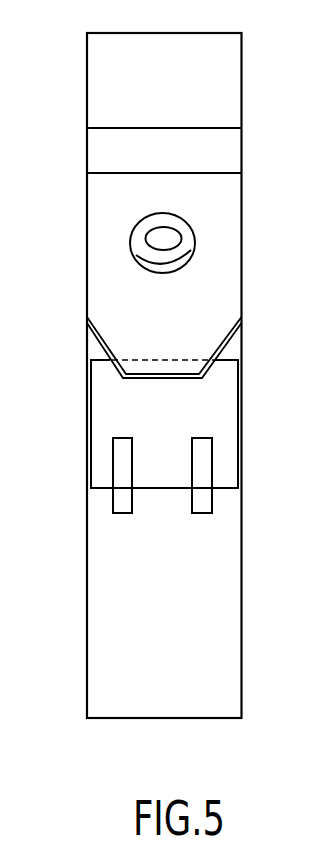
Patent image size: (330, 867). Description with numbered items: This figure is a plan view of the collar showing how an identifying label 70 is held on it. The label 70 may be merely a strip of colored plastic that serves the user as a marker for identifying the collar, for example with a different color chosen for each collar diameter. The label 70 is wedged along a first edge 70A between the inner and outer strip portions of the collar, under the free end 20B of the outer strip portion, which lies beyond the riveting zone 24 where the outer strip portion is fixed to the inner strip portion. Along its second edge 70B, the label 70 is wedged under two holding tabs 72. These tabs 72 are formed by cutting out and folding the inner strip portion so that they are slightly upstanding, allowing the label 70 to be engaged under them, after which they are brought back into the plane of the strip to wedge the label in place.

The riveting 24 is at (78, 262).
The end of outer strip portion 20B is at (195, 333).
The label 70 is at (190, 425).
The first edge of label 70A is at (167, 358).
The second edge of label 70B is at (150, 489).
The holding tab 72 is at (123, 451).